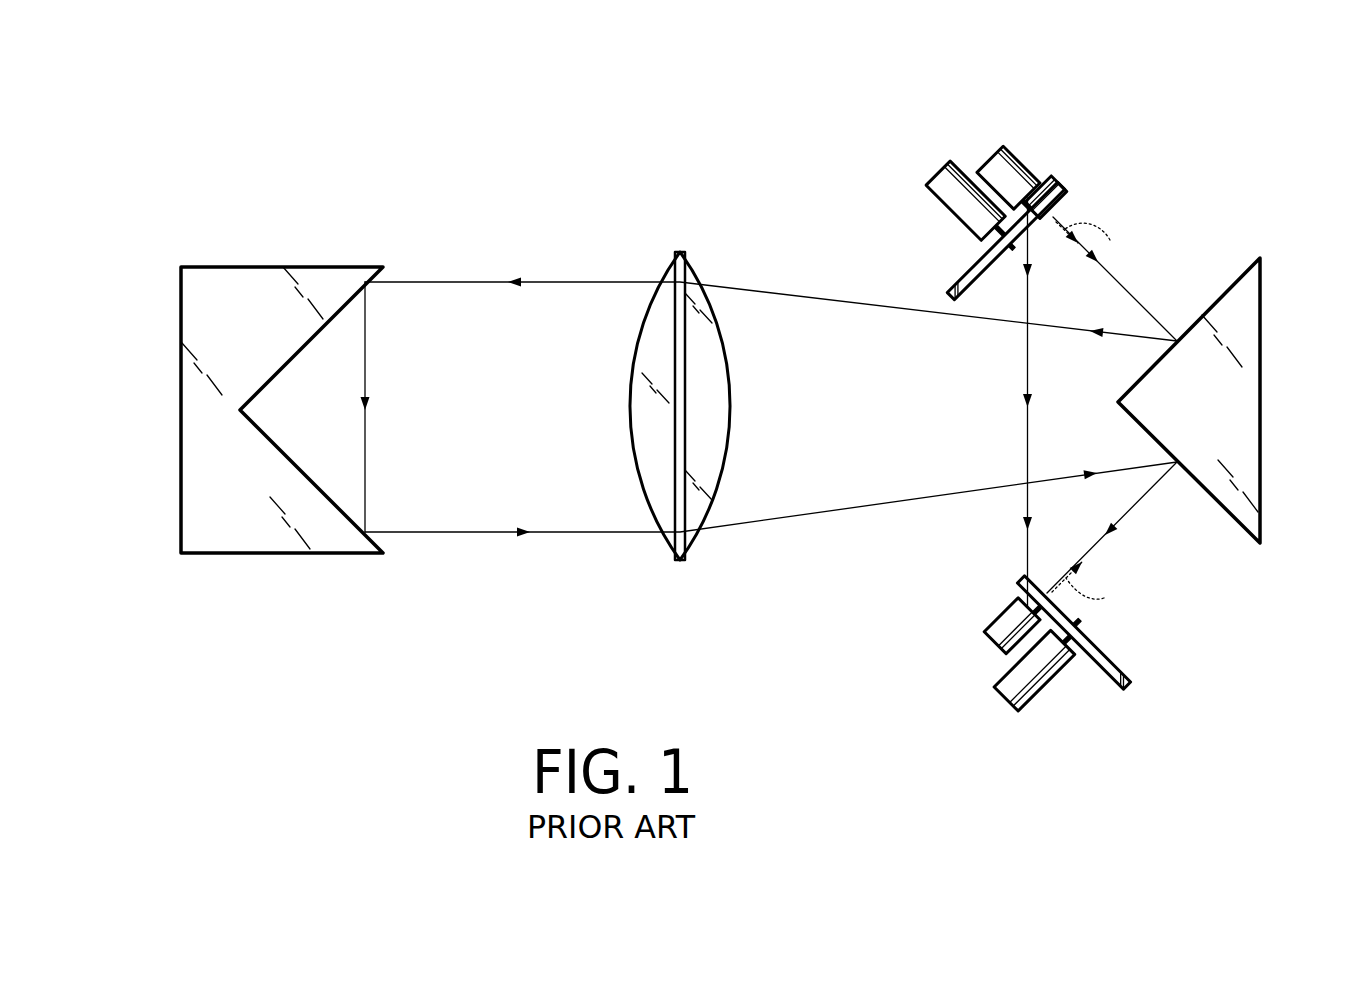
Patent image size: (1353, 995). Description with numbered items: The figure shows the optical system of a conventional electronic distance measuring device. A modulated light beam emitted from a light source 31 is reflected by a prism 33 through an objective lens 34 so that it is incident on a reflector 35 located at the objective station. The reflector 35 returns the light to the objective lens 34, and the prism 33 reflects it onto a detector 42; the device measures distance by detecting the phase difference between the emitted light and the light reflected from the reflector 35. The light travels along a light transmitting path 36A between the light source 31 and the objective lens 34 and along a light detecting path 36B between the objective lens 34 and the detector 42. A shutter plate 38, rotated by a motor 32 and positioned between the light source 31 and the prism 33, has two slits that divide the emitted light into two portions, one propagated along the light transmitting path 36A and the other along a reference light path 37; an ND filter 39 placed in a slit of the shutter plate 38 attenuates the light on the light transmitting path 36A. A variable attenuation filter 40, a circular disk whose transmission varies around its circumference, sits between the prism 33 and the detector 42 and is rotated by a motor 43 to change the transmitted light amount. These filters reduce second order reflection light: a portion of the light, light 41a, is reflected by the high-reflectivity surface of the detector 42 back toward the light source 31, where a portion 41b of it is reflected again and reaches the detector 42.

The light source 31 is at (1042, 148).
The motor 32 is at (940, 175).
The prism 33 is at (1248, 436).
The objective lens 34 is at (757, 403).
The reflector 35 is at (240, 285).
The light transmitting path 36A is at (573, 258).
The light detecting path 36B is at (505, 533).
The reference light path 37 is at (1027, 440).
The shutter plate 38 is at (965, 278).
The ND filter 39 is at (1063, 205).
The variable attenuation filter 40 is at (1113, 662).
The reflected light 41a is at (1102, 579).
The portion of the reflected light 41b is at (1109, 226).
The detector 42 is at (998, 623).
The motor 43 is at (1038, 690).